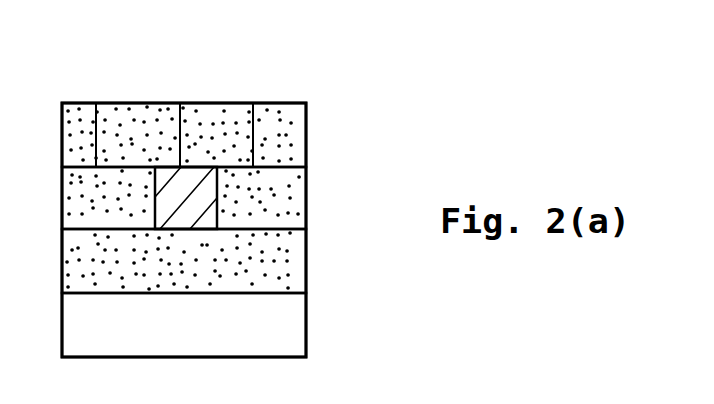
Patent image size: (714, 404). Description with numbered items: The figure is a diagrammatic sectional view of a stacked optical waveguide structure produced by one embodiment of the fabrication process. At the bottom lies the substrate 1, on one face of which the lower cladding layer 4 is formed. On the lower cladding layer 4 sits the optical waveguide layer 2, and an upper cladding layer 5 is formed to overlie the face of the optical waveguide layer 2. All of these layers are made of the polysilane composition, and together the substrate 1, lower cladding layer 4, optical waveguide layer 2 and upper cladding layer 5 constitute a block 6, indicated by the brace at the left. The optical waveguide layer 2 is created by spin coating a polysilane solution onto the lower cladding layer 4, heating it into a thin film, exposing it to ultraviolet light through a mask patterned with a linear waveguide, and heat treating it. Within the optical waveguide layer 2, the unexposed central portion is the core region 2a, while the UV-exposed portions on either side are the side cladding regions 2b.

The substrate 1 is at (288, 320).
The optical waveguide layer 2 is at (211, 123).
The core region 2a is at (177, 193).
The side cladding region 2b is at (96, 190).
The lower cladding layer 4 is at (288, 263).
The upper cladding layer 5 is at (283, 131).
The block 6 is at (46, 107).